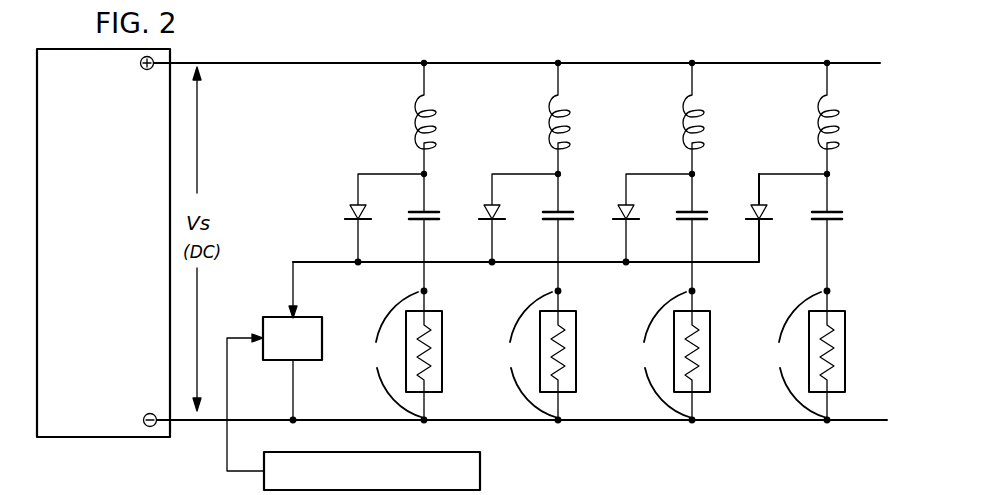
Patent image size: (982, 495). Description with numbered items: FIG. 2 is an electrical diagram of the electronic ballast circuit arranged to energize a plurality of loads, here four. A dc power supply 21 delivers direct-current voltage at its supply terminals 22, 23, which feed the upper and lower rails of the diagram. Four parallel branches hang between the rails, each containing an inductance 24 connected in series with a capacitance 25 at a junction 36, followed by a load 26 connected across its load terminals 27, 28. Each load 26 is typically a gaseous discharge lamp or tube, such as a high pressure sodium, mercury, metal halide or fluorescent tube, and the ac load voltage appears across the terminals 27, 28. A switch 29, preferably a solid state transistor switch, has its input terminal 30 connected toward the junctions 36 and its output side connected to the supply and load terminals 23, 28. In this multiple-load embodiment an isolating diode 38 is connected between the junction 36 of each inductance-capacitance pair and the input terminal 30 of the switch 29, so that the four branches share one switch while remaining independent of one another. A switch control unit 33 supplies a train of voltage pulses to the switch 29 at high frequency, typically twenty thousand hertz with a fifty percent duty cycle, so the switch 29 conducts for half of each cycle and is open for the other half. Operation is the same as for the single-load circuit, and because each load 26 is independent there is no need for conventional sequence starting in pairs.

The dc power supply 21 is at (37, 150).
The supply terminal 22 is at (155, 57).
The supply terminal 23 is at (151, 427).
The inductance 24 is at (430, 104).
The capacitance 25 is at (430, 211).
The load 26 is at (444, 352).
The load terminal 27 is at (427, 292).
The load terminal 28 is at (428, 418).
The switch 29 is at (321, 317).
The input terminal 30 is at (292, 284).
The switch control unit 33 is at (482, 463).
The junction 36 is at (427, 173).
The isolating diode 38 is at (352, 207).